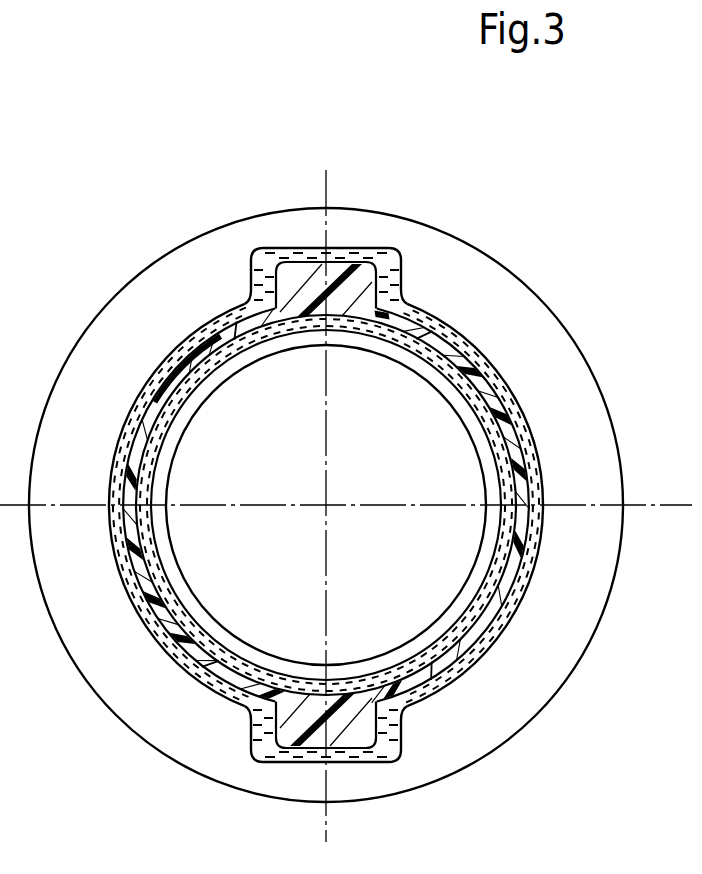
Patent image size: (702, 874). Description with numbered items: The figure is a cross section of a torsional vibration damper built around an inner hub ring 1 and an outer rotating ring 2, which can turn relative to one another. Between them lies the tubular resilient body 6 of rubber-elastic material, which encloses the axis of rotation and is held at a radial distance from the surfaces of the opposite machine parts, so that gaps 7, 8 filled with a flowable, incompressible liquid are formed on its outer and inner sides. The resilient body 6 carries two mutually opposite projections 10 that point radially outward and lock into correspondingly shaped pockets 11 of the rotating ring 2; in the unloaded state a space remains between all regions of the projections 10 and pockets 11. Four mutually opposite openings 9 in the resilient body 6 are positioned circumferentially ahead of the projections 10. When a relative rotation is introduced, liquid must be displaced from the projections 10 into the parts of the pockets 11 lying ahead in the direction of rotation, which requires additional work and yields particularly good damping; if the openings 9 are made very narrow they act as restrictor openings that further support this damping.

The hub ring 1 is at (427, 640).
The rotating ring 2 is at (243, 278).
The resilient body 6 is at (402, 316).
The gap 7 is at (497, 383).
The gap 8 is at (198, 380).
The openings 9 is at (233, 338).
The projections 10 is at (318, 300).
The pockets 11 is at (290, 262).